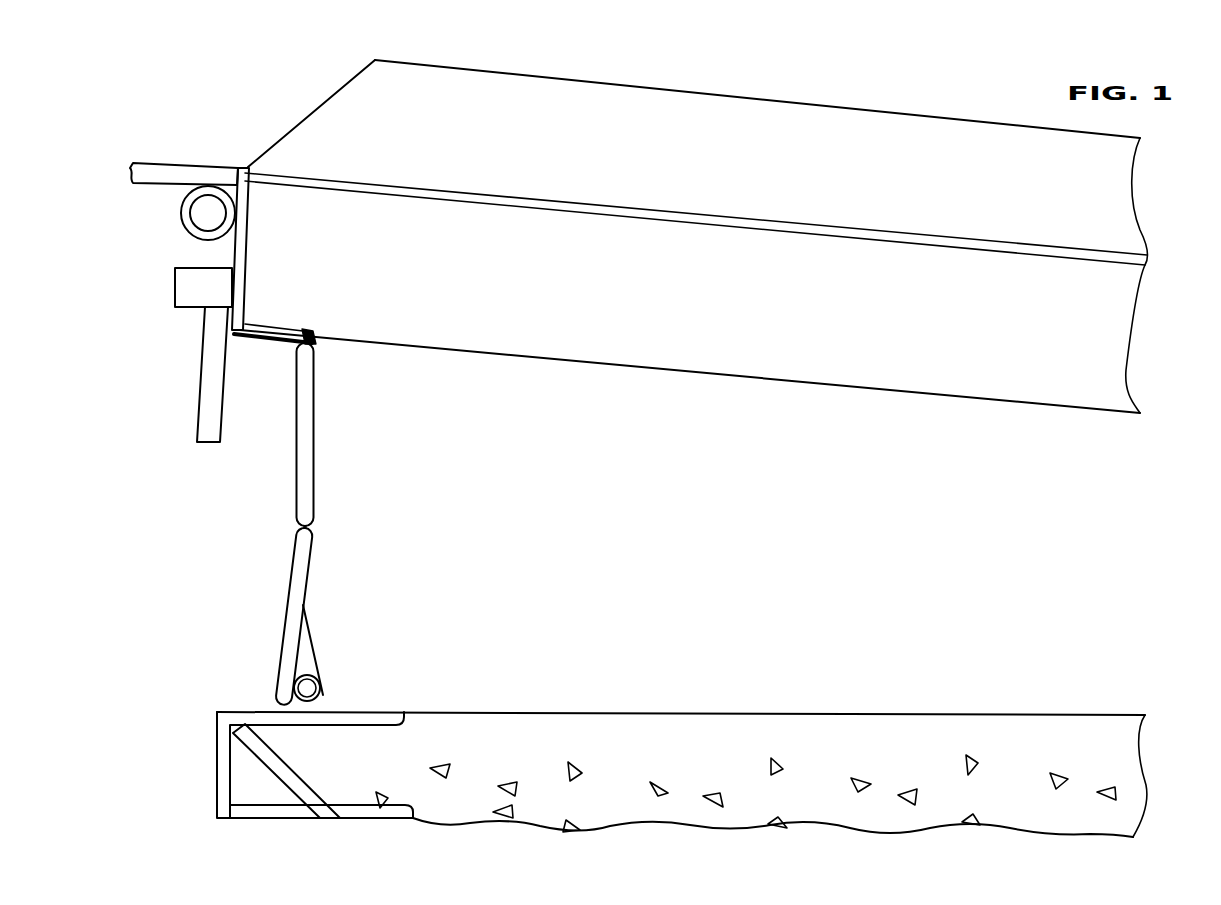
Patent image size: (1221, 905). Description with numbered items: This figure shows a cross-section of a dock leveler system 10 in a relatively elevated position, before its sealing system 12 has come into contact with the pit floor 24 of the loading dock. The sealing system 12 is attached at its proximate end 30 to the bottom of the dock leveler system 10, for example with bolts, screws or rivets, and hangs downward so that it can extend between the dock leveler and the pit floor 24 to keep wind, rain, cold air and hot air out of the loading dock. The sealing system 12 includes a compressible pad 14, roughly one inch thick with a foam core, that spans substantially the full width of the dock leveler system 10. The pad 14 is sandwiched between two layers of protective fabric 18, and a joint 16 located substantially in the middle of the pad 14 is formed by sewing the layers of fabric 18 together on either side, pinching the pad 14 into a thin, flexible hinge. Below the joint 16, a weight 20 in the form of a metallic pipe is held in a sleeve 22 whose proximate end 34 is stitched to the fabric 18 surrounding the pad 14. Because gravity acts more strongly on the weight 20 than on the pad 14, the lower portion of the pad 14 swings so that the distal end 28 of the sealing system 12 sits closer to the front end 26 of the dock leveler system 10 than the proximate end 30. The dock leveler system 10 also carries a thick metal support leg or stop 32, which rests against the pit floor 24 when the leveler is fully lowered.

The dock leveler system 10 is at (758, 400).
The sealing system 12 is at (291, 524).
The pad 14 is at (305, 470).
The joint 16 is at (307, 526).
The protective fabric 18 is at (296, 415).
The weight 20 is at (324, 698).
The sleeve 22 is at (318, 650).
The pit floor 24 is at (432, 716).
The front end 26 is at (234, 166).
The distal end 28 is at (272, 703).
The proximate end 30 is at (313, 333).
The support leg or stop 32 is at (194, 432).
The proximate end 34 is at (300, 607).